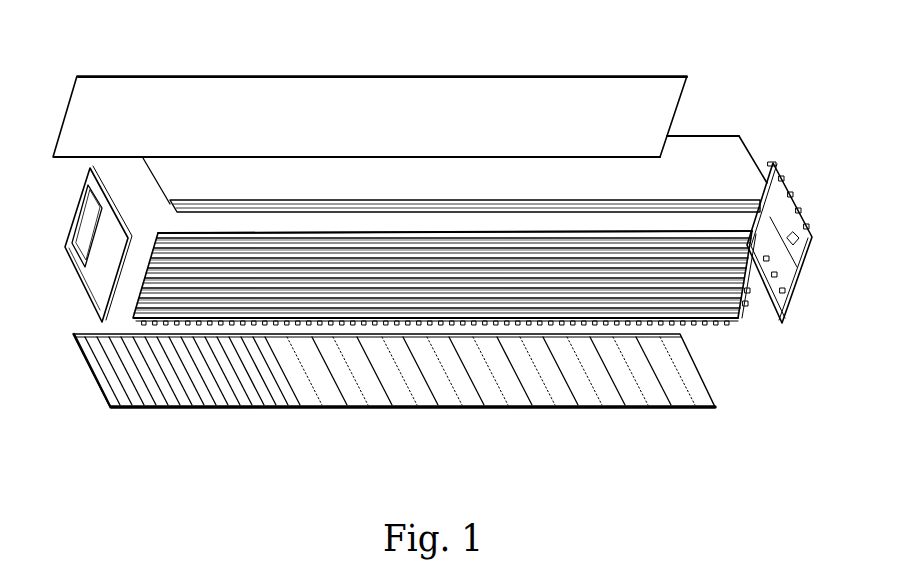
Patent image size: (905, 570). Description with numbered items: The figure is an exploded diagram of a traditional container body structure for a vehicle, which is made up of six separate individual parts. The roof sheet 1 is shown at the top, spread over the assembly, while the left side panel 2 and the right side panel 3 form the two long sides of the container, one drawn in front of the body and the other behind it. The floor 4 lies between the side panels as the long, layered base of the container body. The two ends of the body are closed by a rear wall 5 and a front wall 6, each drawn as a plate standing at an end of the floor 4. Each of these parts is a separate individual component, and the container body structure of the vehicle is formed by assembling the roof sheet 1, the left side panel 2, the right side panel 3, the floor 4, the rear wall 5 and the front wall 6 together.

The roof sheet 1 is at (330, 88).
The left side panel 2 is at (488, 390).
The right side panel 3 is at (722, 148).
The floor 4 is at (707, 303).
The rear wall 5 is at (778, 183).
The front wall 6 is at (95, 282).